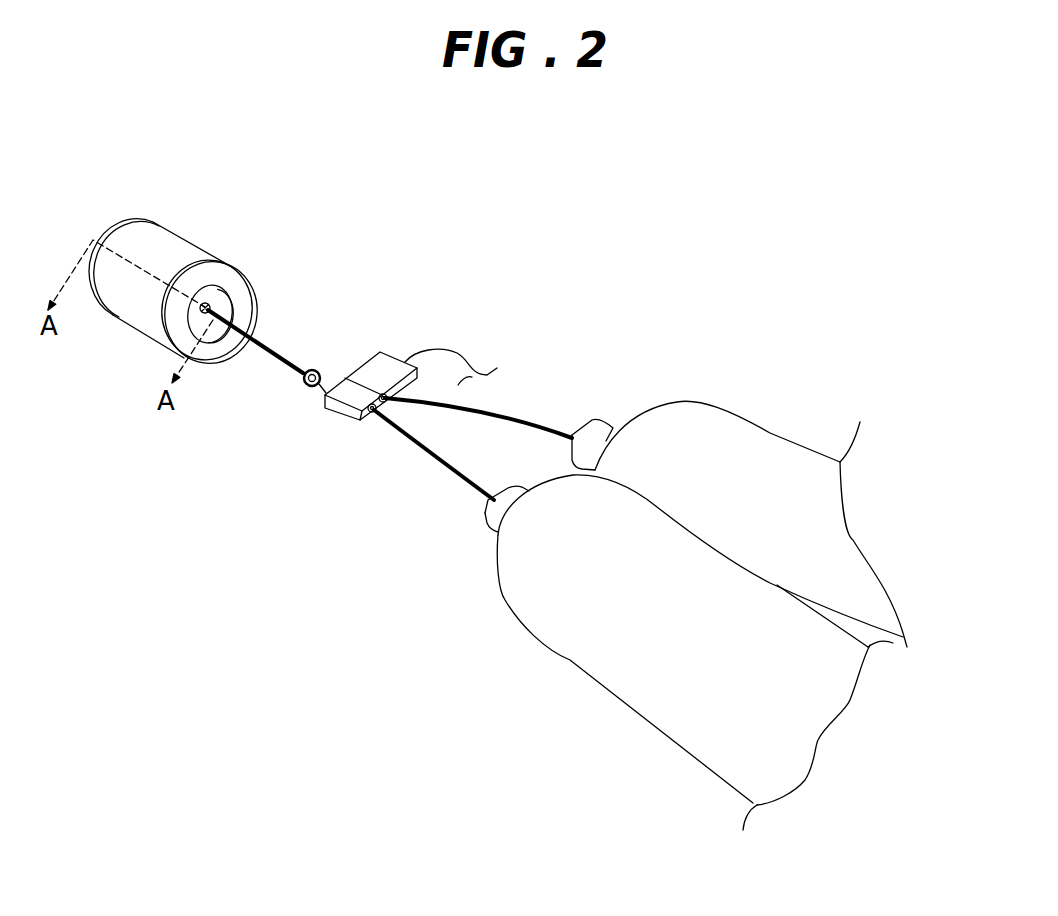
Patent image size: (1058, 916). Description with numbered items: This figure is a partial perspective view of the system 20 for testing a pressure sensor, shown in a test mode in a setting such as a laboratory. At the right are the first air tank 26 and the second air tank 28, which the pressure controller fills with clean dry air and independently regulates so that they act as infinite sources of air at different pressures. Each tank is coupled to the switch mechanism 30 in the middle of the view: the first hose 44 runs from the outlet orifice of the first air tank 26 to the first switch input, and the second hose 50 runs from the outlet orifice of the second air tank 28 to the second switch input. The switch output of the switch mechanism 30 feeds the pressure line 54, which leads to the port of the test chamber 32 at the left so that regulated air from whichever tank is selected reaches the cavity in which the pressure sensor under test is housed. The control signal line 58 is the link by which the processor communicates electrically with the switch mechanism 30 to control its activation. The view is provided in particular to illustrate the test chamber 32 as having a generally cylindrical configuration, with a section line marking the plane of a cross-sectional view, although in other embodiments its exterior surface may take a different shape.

The system 20 is at (294, 668).
The first air tank 26 is at (703, 415).
The second air tank 28 is at (575, 655).
The switch mechanism 30 is at (343, 412).
The test chamber 32 is at (187, 243).
The first hose 44 is at (515, 413).
The second hose 50 is at (448, 468).
The pressure line 54 is at (264, 336).
The control signal line 58 is at (442, 350).